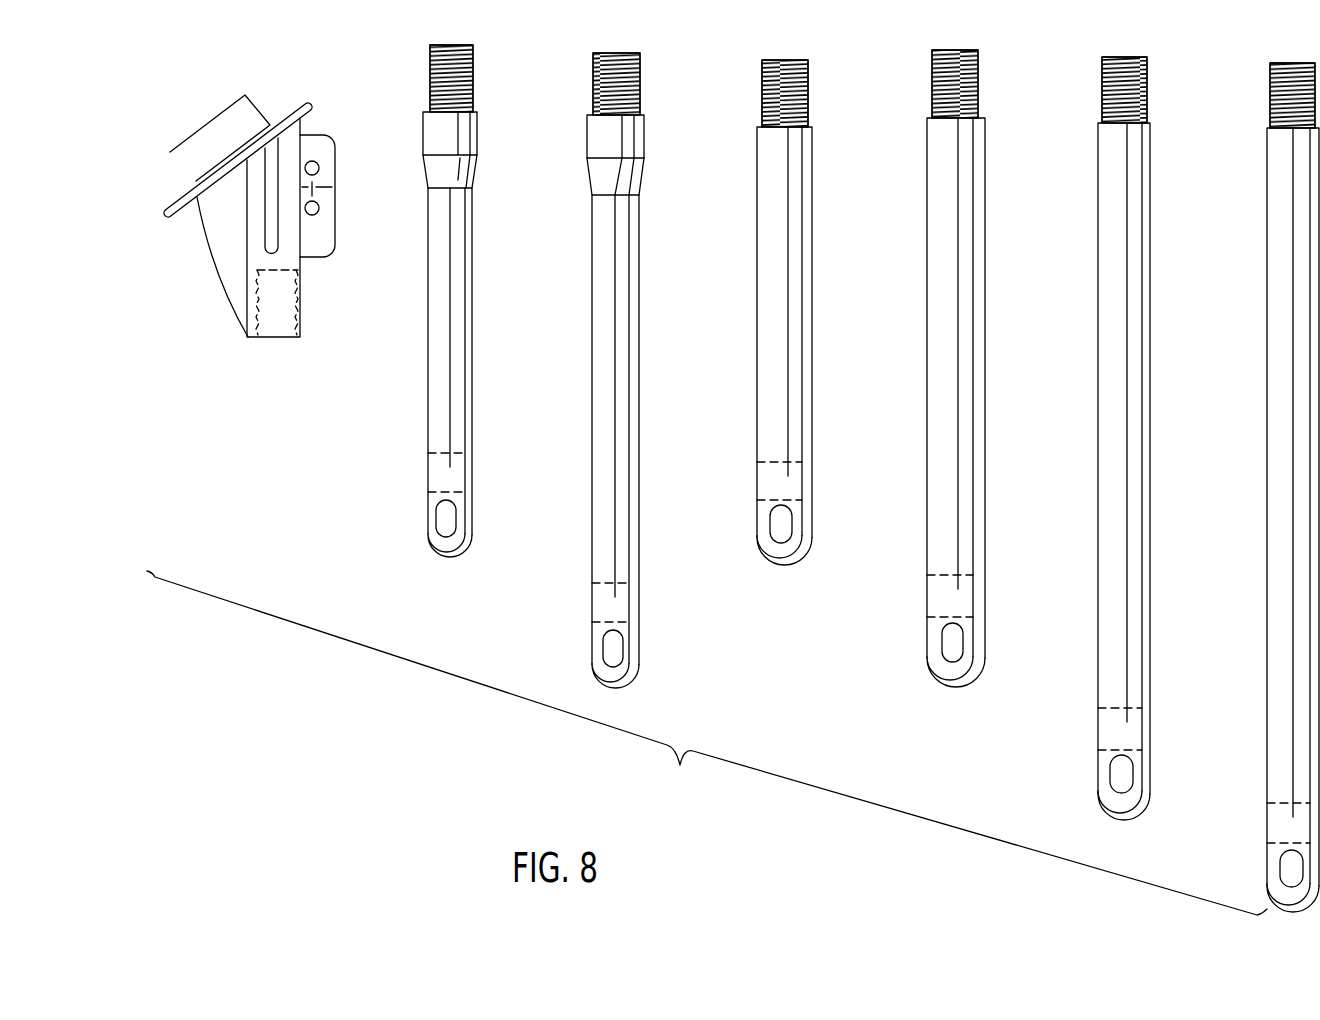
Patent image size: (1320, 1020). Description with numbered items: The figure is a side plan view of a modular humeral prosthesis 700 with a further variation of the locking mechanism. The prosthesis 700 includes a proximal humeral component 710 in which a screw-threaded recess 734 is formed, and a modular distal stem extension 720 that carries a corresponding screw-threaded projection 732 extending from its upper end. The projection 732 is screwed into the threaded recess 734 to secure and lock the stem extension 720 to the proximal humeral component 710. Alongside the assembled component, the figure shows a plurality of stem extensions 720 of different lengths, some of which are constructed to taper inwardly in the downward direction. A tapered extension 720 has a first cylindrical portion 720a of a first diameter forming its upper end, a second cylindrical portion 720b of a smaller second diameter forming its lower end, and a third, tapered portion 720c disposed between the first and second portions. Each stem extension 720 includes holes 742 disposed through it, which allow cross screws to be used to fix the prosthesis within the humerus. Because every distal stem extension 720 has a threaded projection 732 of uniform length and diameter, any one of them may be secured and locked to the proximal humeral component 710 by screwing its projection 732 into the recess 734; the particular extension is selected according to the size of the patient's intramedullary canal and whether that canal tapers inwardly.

The prosthesis 700 is at (262, 337).
The proximal humeral component 710 is at (228, 261).
The screw-threaded recess 734 is at (269, 309).
The modular distal stem extension 720 is at (473, 372).
The screw-threaded projection 732 is at (473, 86).
The first cylindrical portion 720a is at (478, 137).
The third, tapered portion 720c is at (424, 178).
The second cylindrical portion 720b is at (428, 418).
The holes 742 is at (427, 468).